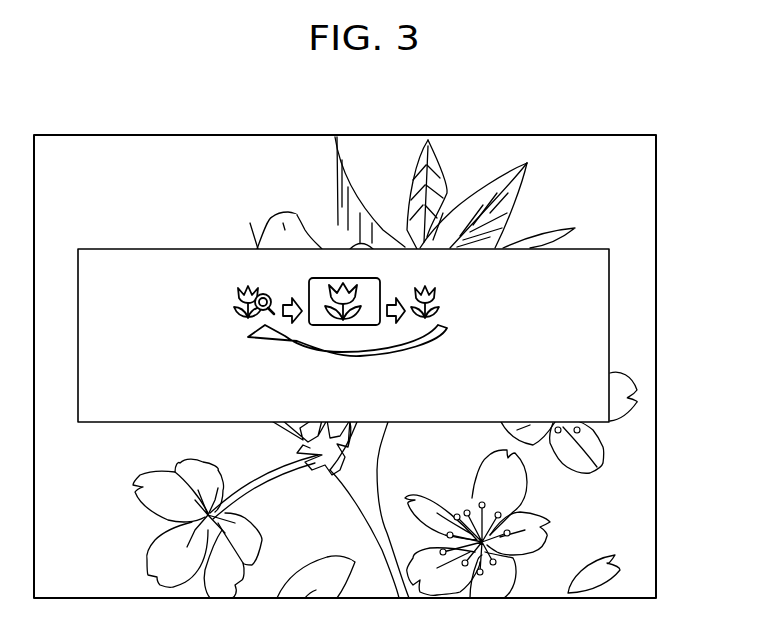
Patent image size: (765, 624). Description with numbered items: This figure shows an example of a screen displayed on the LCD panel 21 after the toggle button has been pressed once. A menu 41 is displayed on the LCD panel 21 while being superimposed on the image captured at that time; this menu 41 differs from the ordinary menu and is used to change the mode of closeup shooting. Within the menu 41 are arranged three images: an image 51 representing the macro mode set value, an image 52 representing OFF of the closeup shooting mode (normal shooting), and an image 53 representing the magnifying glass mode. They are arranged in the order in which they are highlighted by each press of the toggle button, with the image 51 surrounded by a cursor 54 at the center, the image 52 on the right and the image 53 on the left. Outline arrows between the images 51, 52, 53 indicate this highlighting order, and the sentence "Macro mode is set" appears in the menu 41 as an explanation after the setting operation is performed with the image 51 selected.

The LCD panel 21 is at (568, 135).
The menu 41 is at (609, 320).
The image representing macro mode 51 is at (333, 295).
The image representing OFF of closeup shooting mode 52 is at (423, 288).
The image representing magnifying glass mode 53 is at (247, 287).
The cursor 54 is at (363, 278).